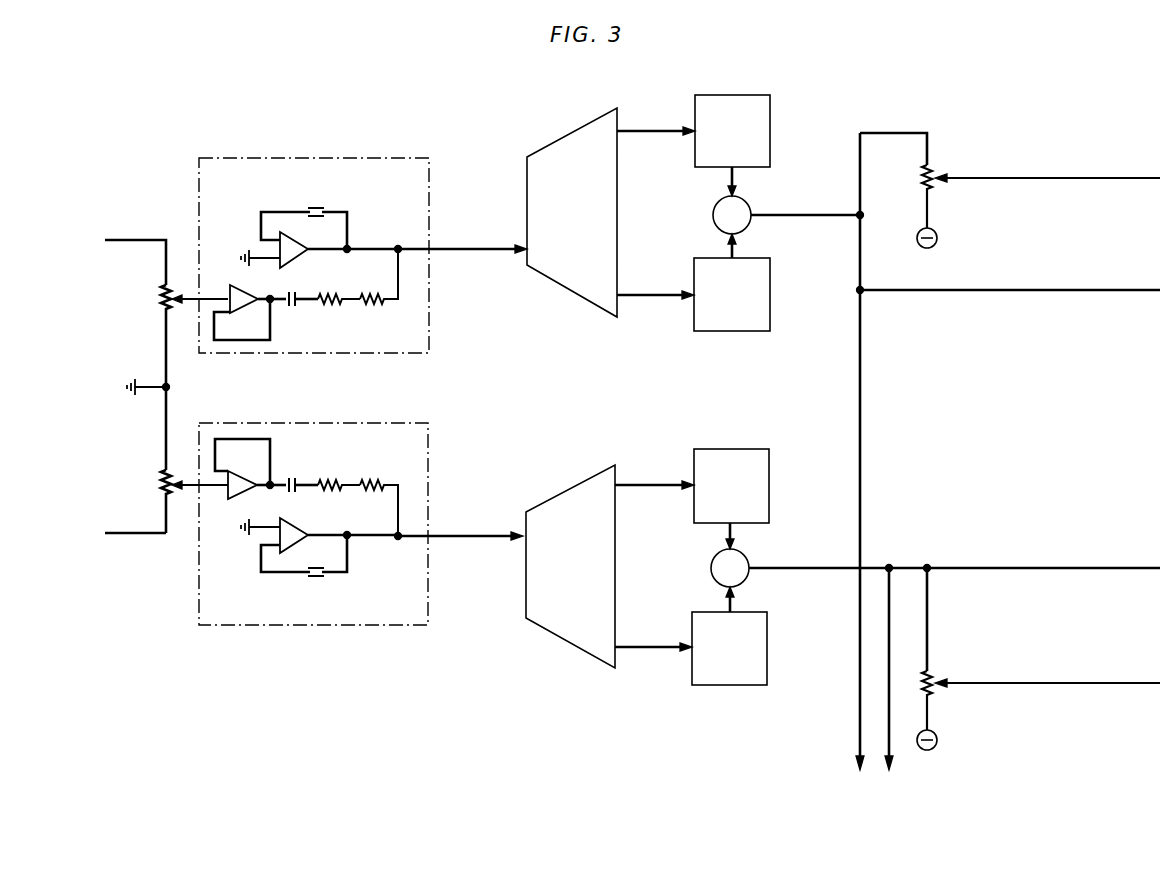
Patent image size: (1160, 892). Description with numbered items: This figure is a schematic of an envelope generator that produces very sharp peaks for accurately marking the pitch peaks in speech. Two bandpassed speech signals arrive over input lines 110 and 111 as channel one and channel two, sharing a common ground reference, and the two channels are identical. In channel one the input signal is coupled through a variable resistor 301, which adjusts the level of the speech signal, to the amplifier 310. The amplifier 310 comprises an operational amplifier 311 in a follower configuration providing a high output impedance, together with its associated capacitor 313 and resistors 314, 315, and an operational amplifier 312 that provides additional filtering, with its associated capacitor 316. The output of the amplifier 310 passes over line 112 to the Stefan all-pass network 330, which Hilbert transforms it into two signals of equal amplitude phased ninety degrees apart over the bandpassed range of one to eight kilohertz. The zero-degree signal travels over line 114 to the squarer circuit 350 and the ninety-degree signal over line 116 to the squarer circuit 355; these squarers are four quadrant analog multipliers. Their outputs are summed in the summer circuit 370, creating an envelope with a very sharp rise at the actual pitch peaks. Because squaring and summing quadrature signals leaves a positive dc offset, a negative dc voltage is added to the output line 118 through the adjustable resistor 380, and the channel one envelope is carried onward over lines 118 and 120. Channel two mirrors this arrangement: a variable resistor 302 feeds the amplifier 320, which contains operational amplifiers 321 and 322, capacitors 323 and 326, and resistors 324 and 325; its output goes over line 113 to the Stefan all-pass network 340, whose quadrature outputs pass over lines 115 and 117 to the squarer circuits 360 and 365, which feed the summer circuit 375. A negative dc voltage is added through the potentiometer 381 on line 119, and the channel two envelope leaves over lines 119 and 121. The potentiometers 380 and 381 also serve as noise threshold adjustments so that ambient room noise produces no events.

The input line 110 is at (159, 236).
The input line 111 is at (150, 540).
The line 112 is at (464, 246).
The line 113 is at (464, 533).
The line 114 is at (673, 135).
The line 115 is at (675, 490).
The line 116 is at (672, 290).
The line 117 is at (675, 637).
The output line 118 is at (1007, 171).
The line 119 is at (1007, 677).
The line 120 is at (1007, 283).
The line 121 is at (1007, 561).
The variable resistor 301 is at (180, 336).
The variable resistor 302 is at (180, 501).
The amplifier 310 is at (229, 154).
The operational amplifier 311 is at (250, 312).
The operational amplifier 312 is at (319, 259).
The capacitor 313 is at (300, 311).
The resistor 314 is at (339, 312).
The resistor 315 is at (378, 289).
The capacitor 316 is at (304, 218).
The amplifier 320 is at (229, 419).
The operational amplifier 321 is at (250, 469).
The operational amplifier 322 is at (319, 528).
The capacitor 323 is at (299, 469).
The resistor 324 is at (339, 473).
The resistor 325 is at (377, 496).
The capacitor 326 is at (304, 567).
The Stefan all-pass network 330 is at (560, 136).
The Stefan all-pass network 340 is at (558, 490).
The squarer circuit 350 is at (727, 92).
The squarer circuit 355 is at (728, 332).
The squarer circuit 360 is at (726, 447).
The squarer circuit 365 is at (726, 689).
The summer circuit 370 is at (708, 219).
The summer circuit 375 is at (706, 572).
The adjustable resistor 380 is at (898, 190).
The noise threshold potentiometer 381 is at (932, 695).